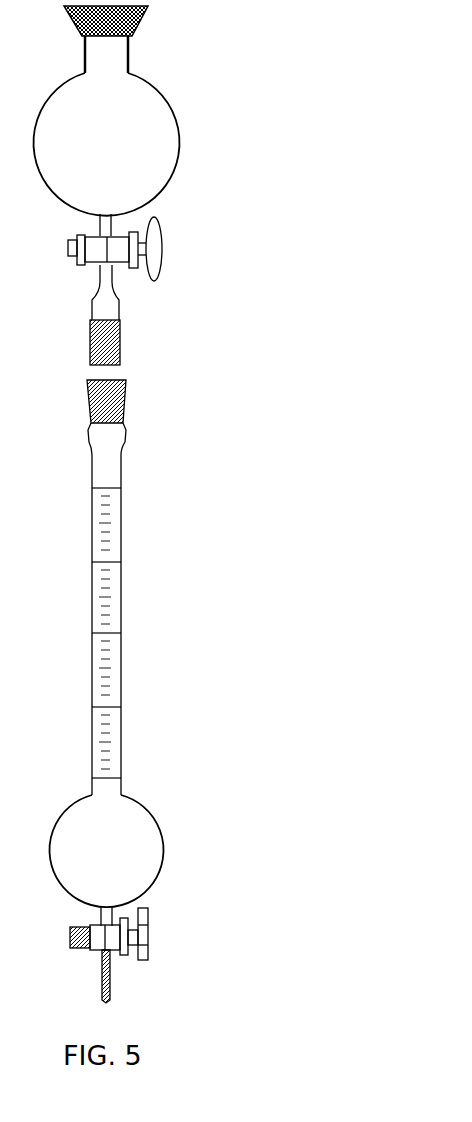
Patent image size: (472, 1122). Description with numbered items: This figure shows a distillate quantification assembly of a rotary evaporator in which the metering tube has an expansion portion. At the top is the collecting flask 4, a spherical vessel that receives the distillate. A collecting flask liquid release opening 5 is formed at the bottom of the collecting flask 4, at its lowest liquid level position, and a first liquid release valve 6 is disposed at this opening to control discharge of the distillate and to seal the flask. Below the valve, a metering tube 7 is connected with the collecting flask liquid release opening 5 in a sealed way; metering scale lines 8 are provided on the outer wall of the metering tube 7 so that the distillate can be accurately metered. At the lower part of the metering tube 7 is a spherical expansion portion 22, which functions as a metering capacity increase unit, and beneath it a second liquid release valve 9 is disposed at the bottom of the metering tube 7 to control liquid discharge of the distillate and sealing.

The collecting flask 4 is at (130, 150).
The collecting flask liquid release opening 5 is at (101, 233).
The first liquid release valve 6 is at (162, 252).
The metering tube 7 is at (107, 470).
The metering scale line 8 is at (107, 605).
The expansion portion 22 is at (128, 833).
The second liquid release valve 9 is at (140, 937).